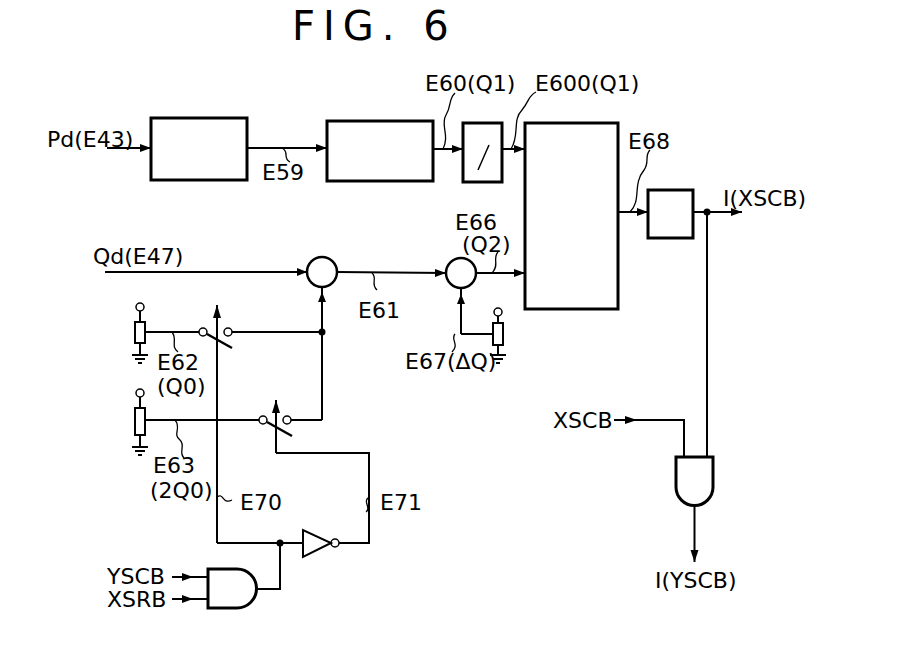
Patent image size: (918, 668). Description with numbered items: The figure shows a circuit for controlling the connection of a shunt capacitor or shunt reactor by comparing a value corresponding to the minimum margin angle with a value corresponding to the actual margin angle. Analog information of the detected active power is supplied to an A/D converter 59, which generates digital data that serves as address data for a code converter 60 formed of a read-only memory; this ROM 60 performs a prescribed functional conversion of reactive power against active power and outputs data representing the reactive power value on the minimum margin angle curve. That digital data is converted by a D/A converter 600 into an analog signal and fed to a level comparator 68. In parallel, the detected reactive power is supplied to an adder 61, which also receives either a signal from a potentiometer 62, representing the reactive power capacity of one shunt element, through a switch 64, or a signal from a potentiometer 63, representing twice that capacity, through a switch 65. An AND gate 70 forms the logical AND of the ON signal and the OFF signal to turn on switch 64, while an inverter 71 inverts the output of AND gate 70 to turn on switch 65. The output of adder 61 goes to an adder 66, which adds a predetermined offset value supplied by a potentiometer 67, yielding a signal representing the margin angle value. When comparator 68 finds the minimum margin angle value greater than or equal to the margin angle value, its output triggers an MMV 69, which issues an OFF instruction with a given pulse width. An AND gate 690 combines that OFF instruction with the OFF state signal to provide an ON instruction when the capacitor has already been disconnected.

The A/D converter 59 is at (193, 180).
The code converter 60 is at (365, 181).
The D/A converter 600 is at (463, 165).
The adder 61 is at (331, 258).
The potentiometer 62 is at (133, 330).
The potentiometer 63 is at (134, 420).
The switch 64 is at (224, 325).
The switch 65 is at (266, 410).
The adder 66 is at (450, 260).
The potentiometer 67 is at (505, 335).
The level comparator 68 is at (618, 282).
The MMV 69 is at (676, 190).
The AND gate 70 is at (252, 601).
The inverter 71 is at (318, 530).
The AND gate 690 is at (713, 478).